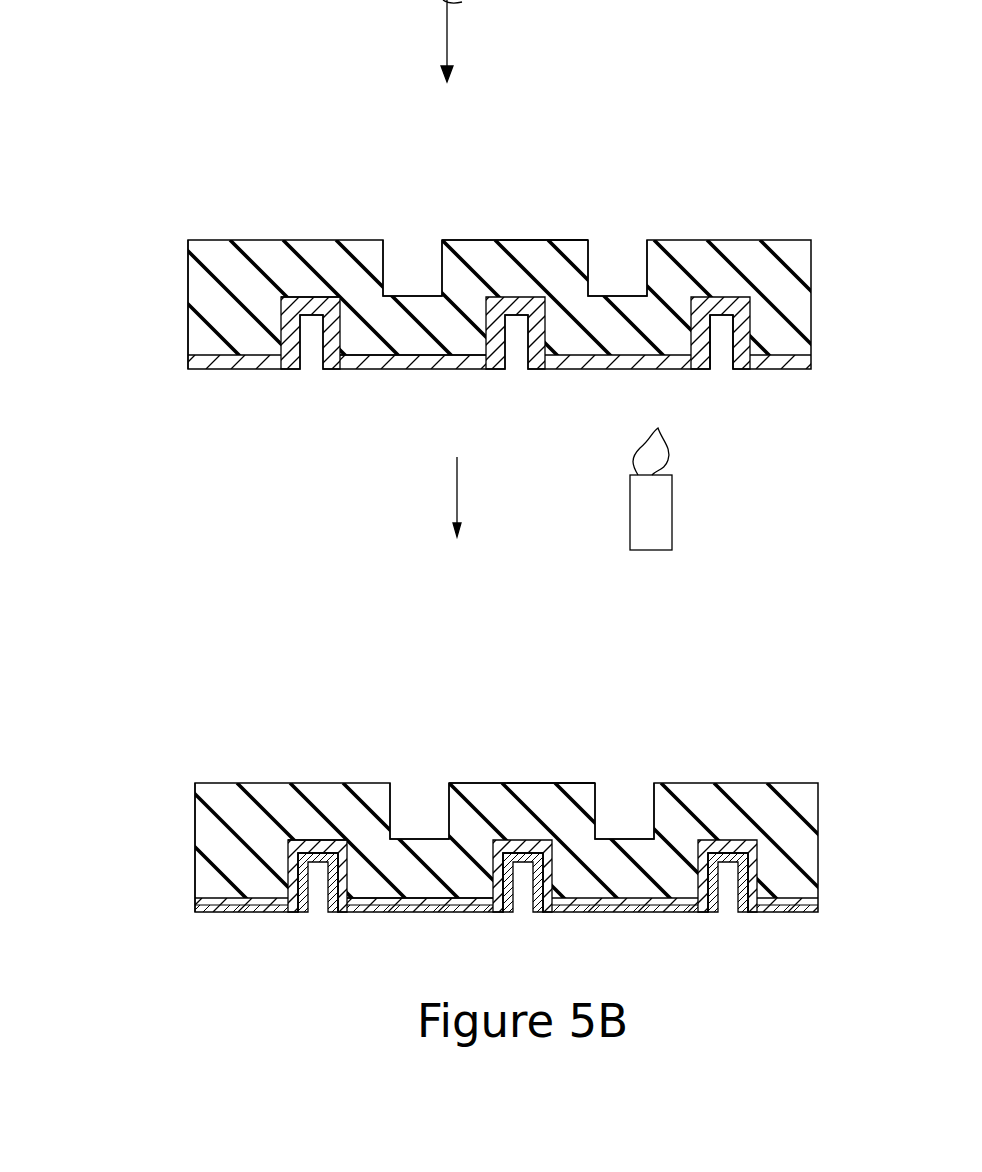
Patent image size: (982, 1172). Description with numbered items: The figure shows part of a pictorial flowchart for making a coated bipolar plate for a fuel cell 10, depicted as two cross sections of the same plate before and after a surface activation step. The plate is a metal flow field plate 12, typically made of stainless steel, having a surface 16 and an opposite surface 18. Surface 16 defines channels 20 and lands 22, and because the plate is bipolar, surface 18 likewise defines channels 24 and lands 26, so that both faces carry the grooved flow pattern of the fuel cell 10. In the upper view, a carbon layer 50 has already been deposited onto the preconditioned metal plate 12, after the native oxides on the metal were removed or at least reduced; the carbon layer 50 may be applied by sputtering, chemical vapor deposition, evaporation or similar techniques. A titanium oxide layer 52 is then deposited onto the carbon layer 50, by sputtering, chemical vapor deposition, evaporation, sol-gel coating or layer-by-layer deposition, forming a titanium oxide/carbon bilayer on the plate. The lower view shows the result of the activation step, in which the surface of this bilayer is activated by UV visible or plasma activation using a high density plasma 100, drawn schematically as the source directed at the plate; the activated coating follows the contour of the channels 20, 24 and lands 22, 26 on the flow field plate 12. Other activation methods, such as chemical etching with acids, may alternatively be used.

The fuel cell 10 is at (740, 188).
The flow field plate 12 is at (226, 234).
The surface 16 is at (305, 318).
The surface 18 is at (540, 240).
The channels 20 is at (310, 333).
The lands 22 is at (417, 350).
The channels 24 is at (402, 247).
The lands 26 is at (475, 240).
The carbon layer 50 is at (197, 358).
The titanium oxide layer 52 is at (721, 317).
The high density plasma 100 is at (673, 513).